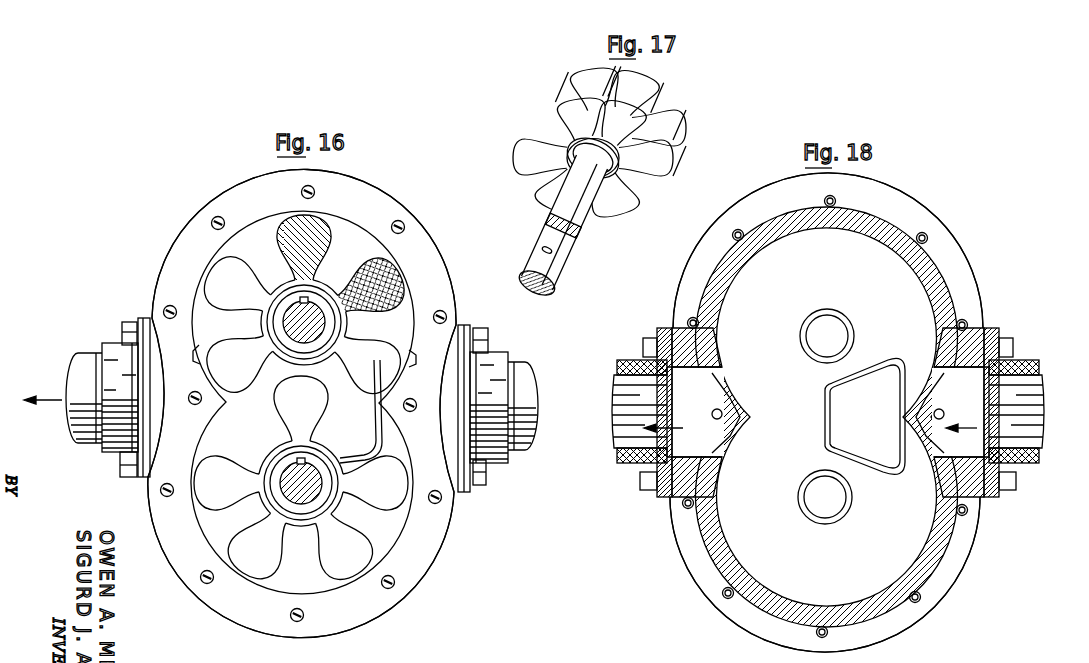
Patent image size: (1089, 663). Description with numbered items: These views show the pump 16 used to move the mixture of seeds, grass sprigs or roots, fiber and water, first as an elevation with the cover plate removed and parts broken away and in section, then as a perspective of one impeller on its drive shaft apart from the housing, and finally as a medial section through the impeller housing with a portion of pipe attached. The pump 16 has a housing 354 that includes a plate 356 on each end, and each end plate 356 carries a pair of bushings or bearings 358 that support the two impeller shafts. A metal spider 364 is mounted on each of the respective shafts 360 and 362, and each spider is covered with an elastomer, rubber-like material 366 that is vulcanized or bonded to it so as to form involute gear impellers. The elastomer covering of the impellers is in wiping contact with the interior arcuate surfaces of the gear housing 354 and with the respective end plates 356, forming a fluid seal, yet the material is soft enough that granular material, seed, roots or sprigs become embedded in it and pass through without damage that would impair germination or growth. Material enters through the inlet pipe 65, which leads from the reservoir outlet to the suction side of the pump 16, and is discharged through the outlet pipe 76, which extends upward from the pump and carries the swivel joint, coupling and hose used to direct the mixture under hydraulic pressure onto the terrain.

In FIG. 16, the pump 16 is at (452, 546).
In FIG. 18, the pump 16 is at (670, 539).
In FIG. 16, the inlet pipe 65 is at (514, 452).
In FIG. 18, the inlet pipe 65 is at (1040, 456).
In FIG. 16, the outlet pipe 76 is at (72, 368).
In FIG. 18, the outlet pipe 76 is at (612, 380).
In FIG. 16, the housing 354 is at (418, 574).
In FIG. 18, the housing 354 is at (704, 580).
In FIG. 16, the plate 356 is at (360, 215).
In FIG. 18, the plate 356 is at (886, 254).
In FIG. 18, the bushings or bearings 358 is at (843, 337).
In FIG. 16, the shaft 360 is at (285, 481).
In FIG. 17, the shaft 360 is at (520, 262).
In FIG. 16, the shaft 362 is at (292, 333).
In FIG. 16, the metal spider 364 is at (366, 318).
In FIG. 16, the elastomer, rubber-like material 366 is at (327, 268).
In FIG. 17, the elastomer, rubber-like material 366 is at (680, 133).